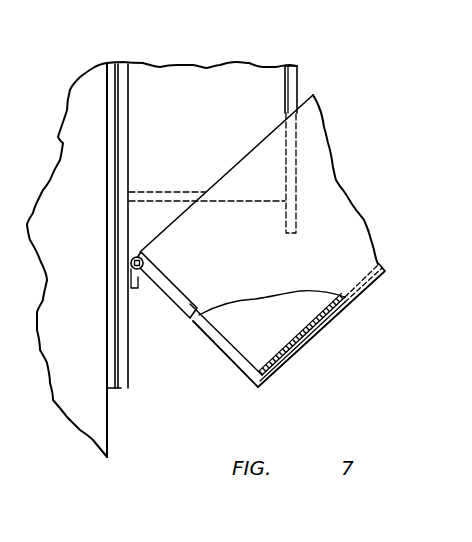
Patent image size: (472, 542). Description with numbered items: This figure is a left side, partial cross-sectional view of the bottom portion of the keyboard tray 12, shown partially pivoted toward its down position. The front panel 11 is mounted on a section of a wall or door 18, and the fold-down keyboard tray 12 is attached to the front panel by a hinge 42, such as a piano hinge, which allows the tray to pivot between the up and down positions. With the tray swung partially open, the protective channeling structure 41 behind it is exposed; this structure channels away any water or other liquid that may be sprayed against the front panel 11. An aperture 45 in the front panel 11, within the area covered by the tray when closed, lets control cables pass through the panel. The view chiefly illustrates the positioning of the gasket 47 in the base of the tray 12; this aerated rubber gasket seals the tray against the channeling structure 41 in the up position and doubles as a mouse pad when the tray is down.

The front panel 11 is at (128, 382).
The keyboard tray 12 is at (358, 302).
The wall or door 18 is at (110, 443).
The channeling structure 41 is at (298, 80).
The hinge 42 is at (141, 287).
The aperture 45 is at (232, 358).
The gasket 47 is at (303, 328).